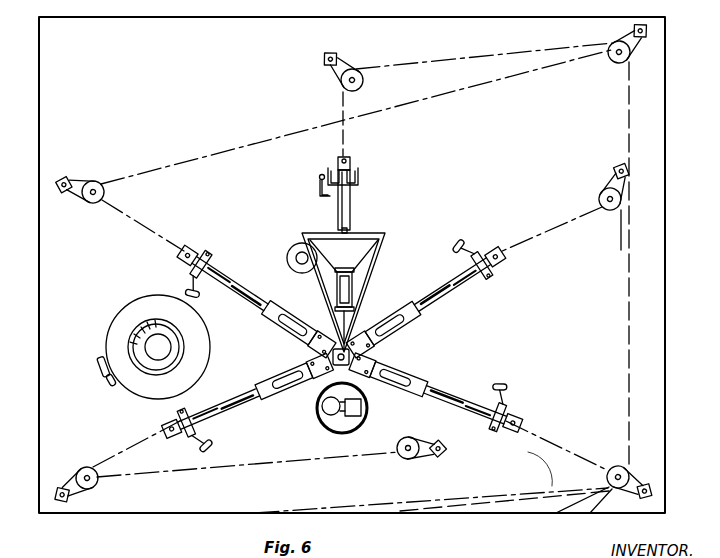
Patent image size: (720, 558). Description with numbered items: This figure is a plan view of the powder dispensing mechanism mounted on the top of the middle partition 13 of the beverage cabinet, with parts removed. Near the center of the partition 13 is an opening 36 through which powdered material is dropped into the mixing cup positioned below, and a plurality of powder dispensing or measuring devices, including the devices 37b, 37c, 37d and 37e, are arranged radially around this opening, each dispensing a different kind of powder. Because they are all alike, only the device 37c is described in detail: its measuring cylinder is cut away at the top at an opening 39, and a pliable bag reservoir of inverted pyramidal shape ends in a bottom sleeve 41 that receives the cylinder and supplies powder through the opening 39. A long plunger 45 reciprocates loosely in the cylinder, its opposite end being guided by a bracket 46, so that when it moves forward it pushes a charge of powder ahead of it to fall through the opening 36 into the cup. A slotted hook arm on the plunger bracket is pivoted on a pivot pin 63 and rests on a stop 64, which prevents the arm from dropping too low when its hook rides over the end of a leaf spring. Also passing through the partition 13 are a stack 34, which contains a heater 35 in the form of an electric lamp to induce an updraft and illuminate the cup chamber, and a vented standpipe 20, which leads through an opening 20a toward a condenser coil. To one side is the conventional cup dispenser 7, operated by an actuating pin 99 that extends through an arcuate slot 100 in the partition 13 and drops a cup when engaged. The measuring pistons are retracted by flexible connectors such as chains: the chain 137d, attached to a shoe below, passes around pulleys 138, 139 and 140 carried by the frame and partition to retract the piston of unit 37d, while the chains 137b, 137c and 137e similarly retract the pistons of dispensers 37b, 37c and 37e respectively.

The partition 13 is at (42, 126).
The cup dispenser 7 is at (128, 312).
The vented standpipe 20 is at (294, 262).
The opening 20a is at (296, 252).
The stack 34 is at (319, 418).
The heater 35 is at (352, 401).
The opening 36 is at (331, 374).
The powder dispensing device 37b is at (455, 288).
The powder dispensing device 37c is at (351, 210).
The powder dispensing device 37d is at (247, 289).
The powder dispensing device 37e is at (278, 392).
The cut-away opening 39 is at (350, 290).
The bottom sleeve 41 is at (373, 278).
The plunger 45 is at (351, 160).
The bracket 46 is at (359, 176).
The pivot pin 63 is at (318, 192).
The stop 64 is at (319, 177).
The actuating pin 99 is at (107, 380).
The arcuate slot 100 is at (103, 360).
The chain 137b is at (556, 216).
The chain 137c is at (434, 57).
The flexible connector 137d is at (225, 152).
The chain 137e is at (236, 466).
The pulley 138 is at (626, 474).
The pulley 139 is at (618, 56).
The pulley 140 is at (94, 182).